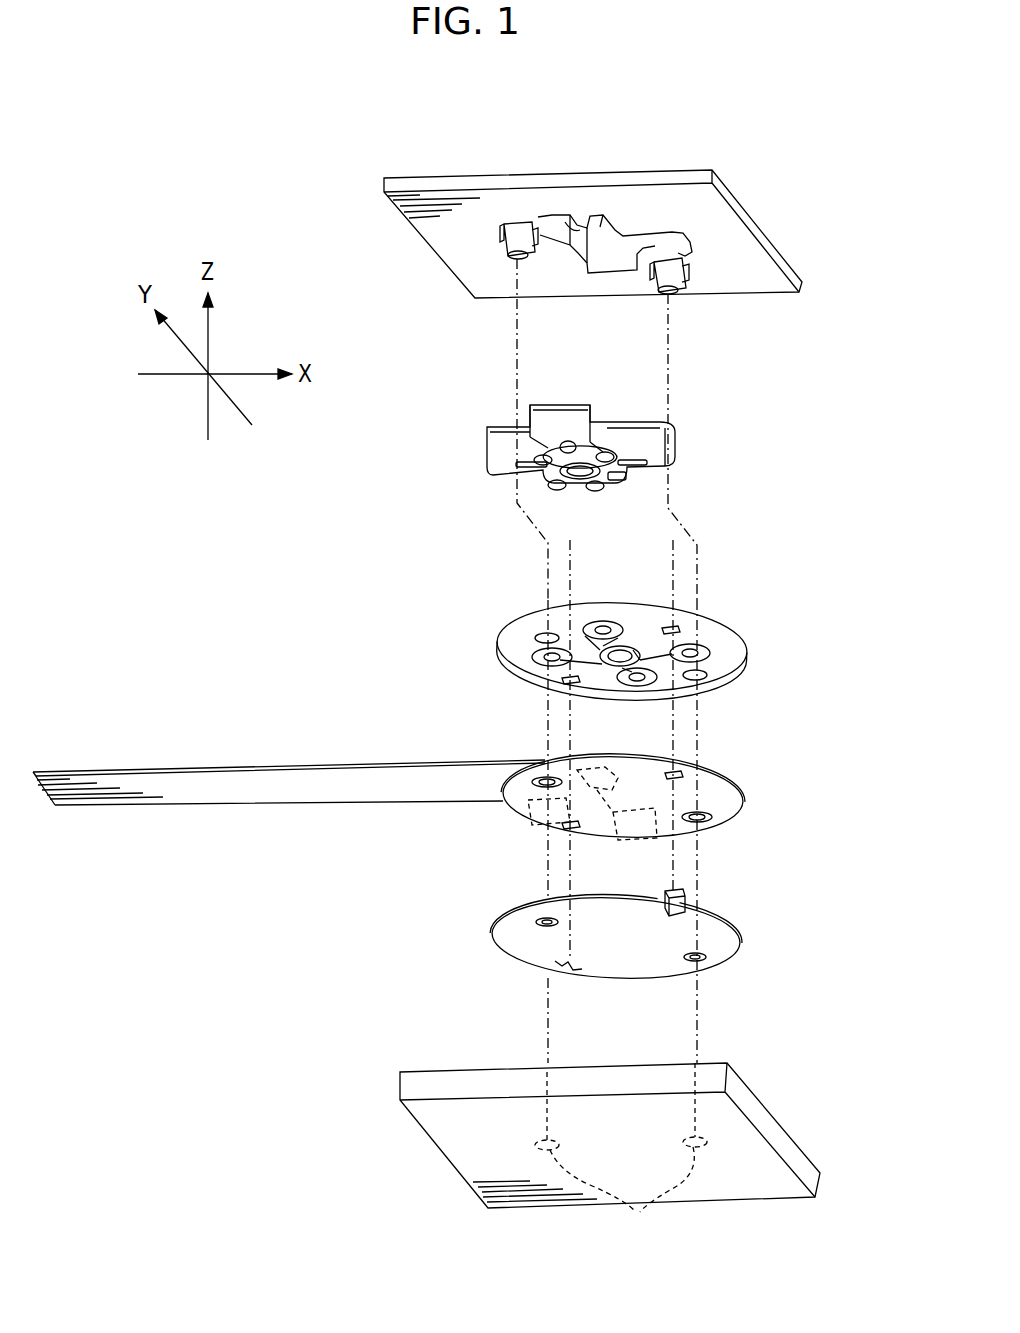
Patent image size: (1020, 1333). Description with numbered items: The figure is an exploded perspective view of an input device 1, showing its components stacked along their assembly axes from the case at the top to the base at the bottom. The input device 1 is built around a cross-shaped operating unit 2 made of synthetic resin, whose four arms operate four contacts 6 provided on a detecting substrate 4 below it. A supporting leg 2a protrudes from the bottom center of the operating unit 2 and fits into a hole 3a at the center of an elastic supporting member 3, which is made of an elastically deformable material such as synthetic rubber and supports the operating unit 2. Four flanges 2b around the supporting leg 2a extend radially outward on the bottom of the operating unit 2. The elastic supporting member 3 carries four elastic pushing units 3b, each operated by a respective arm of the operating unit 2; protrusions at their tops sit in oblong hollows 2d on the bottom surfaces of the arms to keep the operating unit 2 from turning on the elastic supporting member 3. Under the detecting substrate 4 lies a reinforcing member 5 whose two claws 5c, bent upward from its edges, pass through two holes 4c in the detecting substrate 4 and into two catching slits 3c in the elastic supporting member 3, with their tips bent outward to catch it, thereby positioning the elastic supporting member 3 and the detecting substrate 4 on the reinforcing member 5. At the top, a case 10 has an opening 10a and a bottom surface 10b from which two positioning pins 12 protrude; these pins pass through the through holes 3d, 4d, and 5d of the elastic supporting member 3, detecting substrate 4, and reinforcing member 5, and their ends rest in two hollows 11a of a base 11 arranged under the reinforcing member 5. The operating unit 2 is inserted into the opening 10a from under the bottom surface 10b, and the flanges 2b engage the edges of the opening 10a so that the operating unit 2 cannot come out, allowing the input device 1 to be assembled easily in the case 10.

The input device 1 is at (826, 120).
The case 10 is at (758, 195).
The opening 10a is at (587, 220).
The bottom surface 10b is at (742, 254).
The positioning pin 12 is at (498, 245).
The operating unit 2 is at (698, 442).
The supporting leg 2a is at (580, 476).
The flange 2b is at (606, 453).
The oblong hollow 2d is at (568, 441).
The elastic supporting member 3 is at (760, 620).
The hole 3a is at (620, 664).
The elastic pushing unit 3b is at (604, 626).
The catching slit 3c is at (674, 628).
The through hole 3d is at (547, 638).
The detecting substrate 4 is at (764, 800).
The hole 4c is at (688, 784).
The through hole 4d is at (547, 786).
The contact 6 is at (703, 806).
The reinforcing member 5 is at (762, 945).
The claw 5c is at (662, 932).
The through hole 5d is at (547, 926).
The base 11 is at (786, 1100).
The hollow 11a is at (640, 1210).